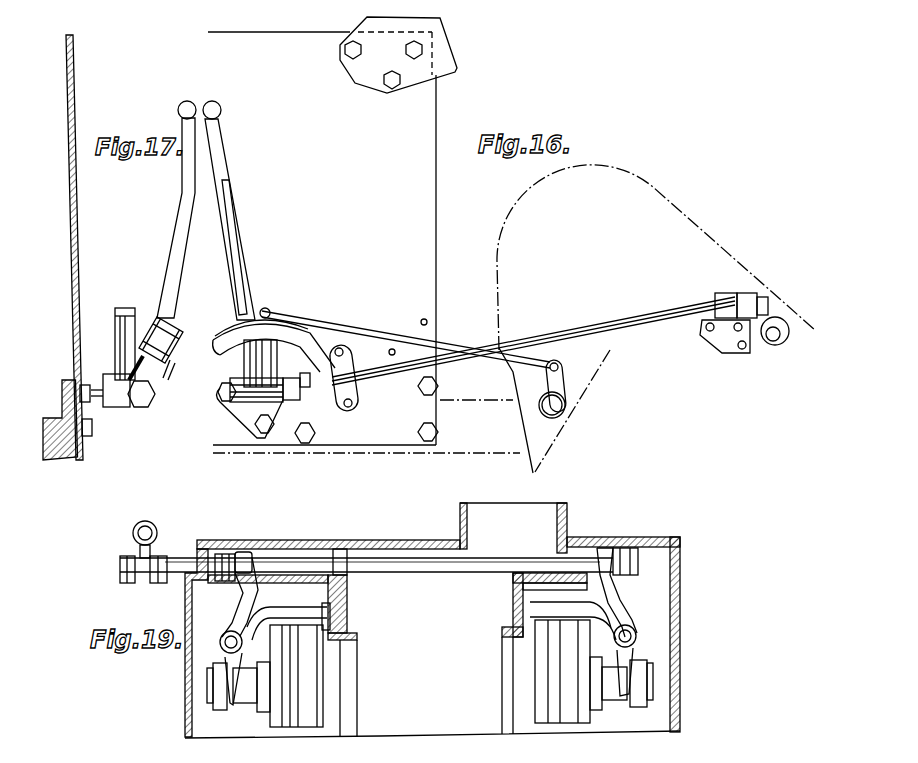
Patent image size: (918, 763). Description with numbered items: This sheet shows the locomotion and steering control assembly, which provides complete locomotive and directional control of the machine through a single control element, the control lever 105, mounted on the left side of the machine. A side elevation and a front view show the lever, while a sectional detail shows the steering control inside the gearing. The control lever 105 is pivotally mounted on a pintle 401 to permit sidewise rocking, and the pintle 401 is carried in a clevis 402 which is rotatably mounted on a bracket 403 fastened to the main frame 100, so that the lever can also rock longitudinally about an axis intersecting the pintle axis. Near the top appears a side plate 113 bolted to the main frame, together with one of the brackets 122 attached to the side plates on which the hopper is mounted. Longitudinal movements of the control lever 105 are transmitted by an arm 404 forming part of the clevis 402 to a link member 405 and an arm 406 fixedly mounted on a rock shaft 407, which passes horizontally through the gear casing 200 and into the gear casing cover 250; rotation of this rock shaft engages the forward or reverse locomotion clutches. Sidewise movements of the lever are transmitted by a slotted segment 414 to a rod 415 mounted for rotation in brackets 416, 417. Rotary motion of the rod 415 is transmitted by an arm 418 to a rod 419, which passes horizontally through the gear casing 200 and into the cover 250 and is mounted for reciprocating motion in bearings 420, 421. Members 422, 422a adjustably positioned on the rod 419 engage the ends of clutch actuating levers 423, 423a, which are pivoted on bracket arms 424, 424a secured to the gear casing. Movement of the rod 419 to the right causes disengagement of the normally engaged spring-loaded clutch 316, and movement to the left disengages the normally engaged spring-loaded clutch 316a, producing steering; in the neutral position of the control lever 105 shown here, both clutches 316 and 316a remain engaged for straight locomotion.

In FIG. 17, the main frame 100 is at (70, 380).
In FIG. 17, the control lever 105 is at (178, 108).
In FIG. 16, the control lever 105 is at (224, 143).
In FIG. 16, the side plate 113 is at (295, 38).
In FIG. 16, the bracket 122 is at (445, 68).
In FIG. 16, the gear housing 200 is at (667, 186).
In FIG. 19, the gear housing 200 is at (343, 541).
In FIG. 19, the gear housing cover 250 is at (627, 537).
In FIG. 19, the spring-loaded clutch 316 is at (300, 720).
In FIG. 19, the spring-loaded clutch 316a is at (552, 717).
In FIG. 17, the pintle 401 is at (145, 402).
In FIG. 16, the pintle 401 is at (232, 404).
In FIG. 17, the clevis 402 is at (118, 408).
In FIG. 16, the clevis 402 is at (262, 420).
In FIG. 17, the bracket 403 is at (86, 437).
In FIG. 16, the bracket 403 is at (245, 425).
In FIG. 17, the arm 404 is at (120, 322).
In FIG. 16, the arm 404 is at (252, 368).
In FIG. 17, the link member 405 is at (143, 302).
In FIG. 16, the link member 405 is at (318, 322).
In FIG. 16, the arm 406 is at (565, 388).
In FIG. 16, the rock shaft 407 is at (560, 410).
In FIG. 17, the slotted segment 414 is at (162, 355).
In FIG. 16, the slotted segment 414 is at (230, 333).
In FIG. 16, the rod 415 is at (545, 337).
In FIG. 16, the bracket 416 is at (358, 390).
In FIG. 16, the bracket 417 is at (722, 338).
In FIG. 16, the arm 418 is at (752, 326).
In FIG. 19, the arm 418 is at (148, 556).
In FIG. 19, the rod 419 is at (500, 557).
In FIG. 19, the bearing 420 is at (213, 550).
In FIG. 19, the bearing 421 is at (577, 550).
In FIG. 19, the member 422 is at (243, 553).
In FIG. 19, the member 422a is at (623, 550).
In FIG. 19, the clutch actuating lever 423 is at (243, 600).
In FIG. 19, the clutch actuating lever 423a is at (607, 588).
In FIG. 19, the bracket arm 424 is at (268, 607).
In FIG. 19, the bracket arm 424a is at (613, 612).